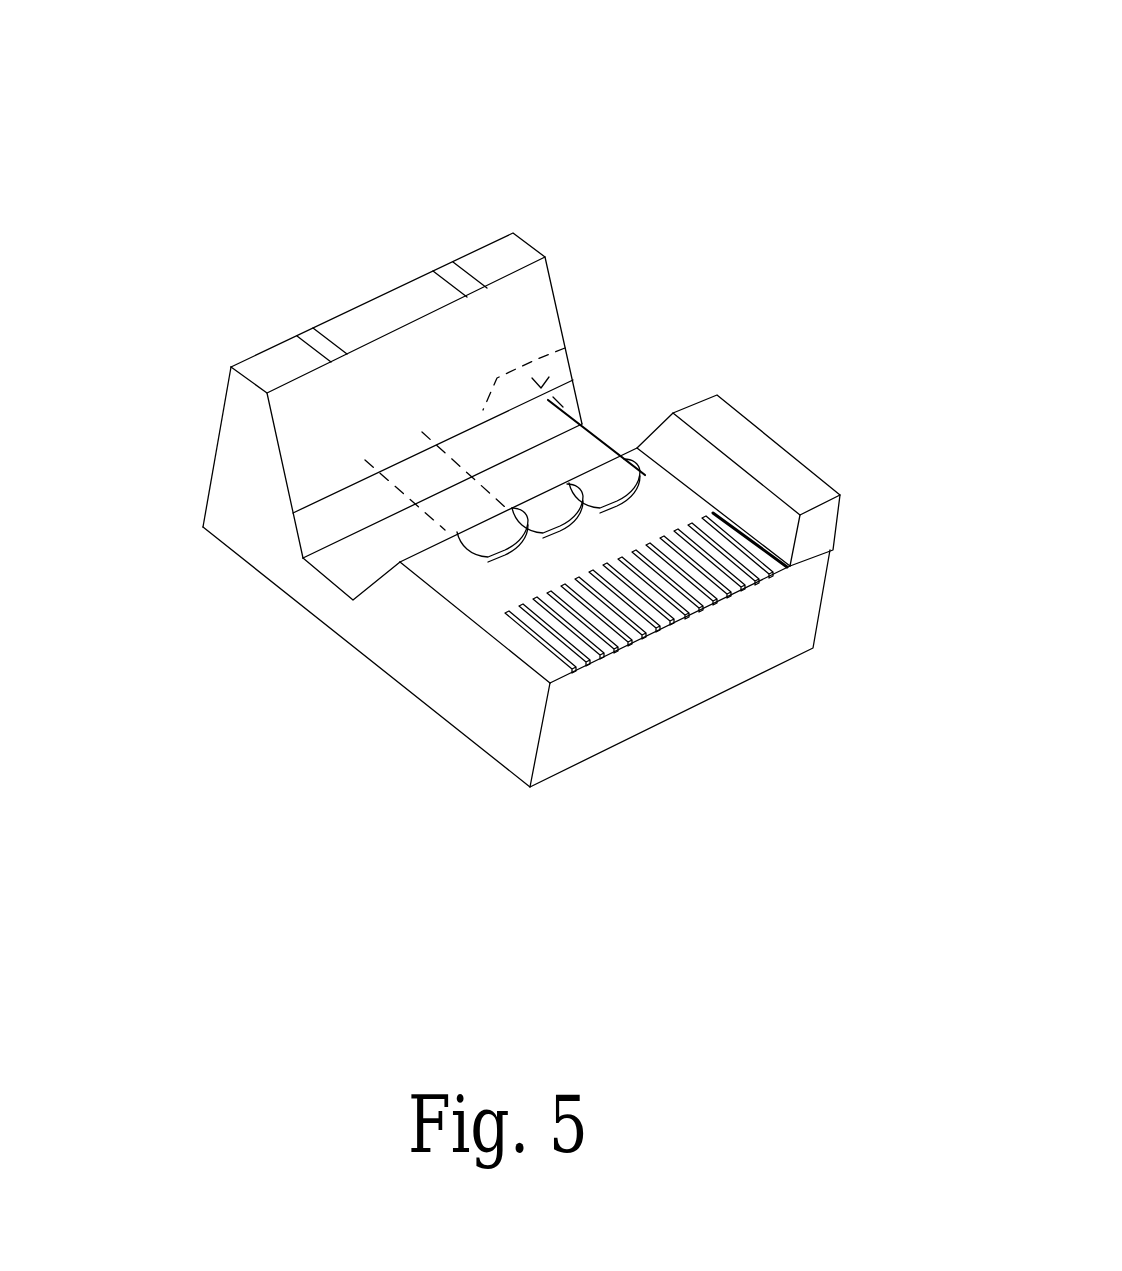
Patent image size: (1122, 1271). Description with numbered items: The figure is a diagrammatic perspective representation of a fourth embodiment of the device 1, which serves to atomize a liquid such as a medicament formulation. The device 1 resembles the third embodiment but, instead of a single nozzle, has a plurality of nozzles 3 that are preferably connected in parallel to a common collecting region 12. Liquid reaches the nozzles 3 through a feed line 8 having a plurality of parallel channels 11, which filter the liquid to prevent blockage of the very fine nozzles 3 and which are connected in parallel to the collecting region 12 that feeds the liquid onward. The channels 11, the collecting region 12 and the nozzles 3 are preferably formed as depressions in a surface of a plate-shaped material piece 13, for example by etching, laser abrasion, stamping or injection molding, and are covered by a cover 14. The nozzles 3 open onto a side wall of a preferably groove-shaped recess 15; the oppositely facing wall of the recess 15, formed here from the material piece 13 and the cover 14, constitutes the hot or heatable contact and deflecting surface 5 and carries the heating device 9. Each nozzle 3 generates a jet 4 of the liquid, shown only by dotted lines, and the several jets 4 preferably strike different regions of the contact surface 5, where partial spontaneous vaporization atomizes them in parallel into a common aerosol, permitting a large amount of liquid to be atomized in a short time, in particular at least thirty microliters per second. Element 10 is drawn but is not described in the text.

The device 1 is at (647, 220).
The nozzle 3 is at (457, 532).
The jet 4 is at (565, 348).
The contact surface 5 is at (517, 283).
The feed line 8 is at (487, 607).
The heating device 9 is at (273, 433).
The slots 10 is at (312, 337).
The channels 11 is at (608, 642).
The collecting region 12 is at (490, 582).
The material piece 13 is at (258, 528).
The cover 14 is at (238, 400).
The recess 15 is at (355, 552).